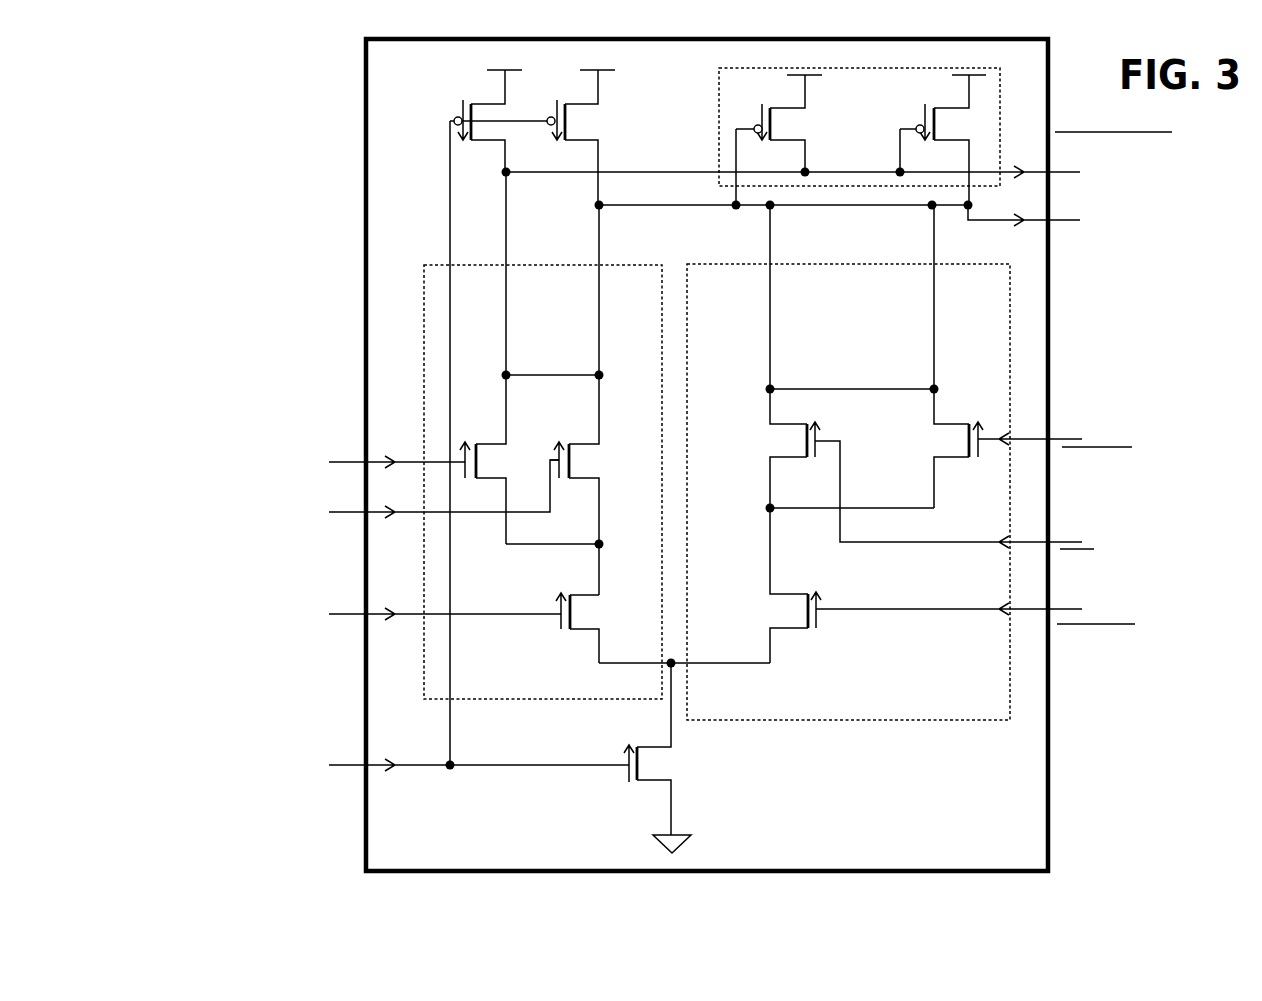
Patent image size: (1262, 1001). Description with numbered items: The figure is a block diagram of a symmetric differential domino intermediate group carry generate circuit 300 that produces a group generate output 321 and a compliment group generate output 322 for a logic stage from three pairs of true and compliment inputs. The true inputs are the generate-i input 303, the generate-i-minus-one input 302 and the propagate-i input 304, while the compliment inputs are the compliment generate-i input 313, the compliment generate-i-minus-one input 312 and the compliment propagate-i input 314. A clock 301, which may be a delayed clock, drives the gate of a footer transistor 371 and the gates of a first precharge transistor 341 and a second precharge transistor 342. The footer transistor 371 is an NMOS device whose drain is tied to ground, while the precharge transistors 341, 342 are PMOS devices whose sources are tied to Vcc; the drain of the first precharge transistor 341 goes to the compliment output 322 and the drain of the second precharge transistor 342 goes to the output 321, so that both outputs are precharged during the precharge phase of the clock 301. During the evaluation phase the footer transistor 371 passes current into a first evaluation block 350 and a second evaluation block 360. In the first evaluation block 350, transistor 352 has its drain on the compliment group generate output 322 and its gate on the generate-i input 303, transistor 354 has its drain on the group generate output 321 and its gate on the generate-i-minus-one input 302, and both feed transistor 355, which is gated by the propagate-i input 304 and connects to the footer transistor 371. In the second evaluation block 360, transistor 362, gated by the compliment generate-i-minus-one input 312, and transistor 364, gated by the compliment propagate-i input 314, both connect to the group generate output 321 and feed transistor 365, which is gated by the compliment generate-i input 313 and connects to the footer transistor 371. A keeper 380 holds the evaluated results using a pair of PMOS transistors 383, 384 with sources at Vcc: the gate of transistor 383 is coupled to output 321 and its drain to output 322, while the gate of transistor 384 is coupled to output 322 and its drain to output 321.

The group carry generate circuit 300 is at (541, 455).
The clock 301 is at (479, 463).
The generate i-1 input 302 is at (416, 512).
The generate i input 303 is at (377, 439).
The propagate i input 304 is at (440, 635).
The compliment generate i-1 input 312 is at (1057, 460).
The compliment generate i input 313 is at (975, 632).
The compliment propagate i input 314 is at (958, 512).
The group generate output 321 is at (888, 235).
The compliment group generate output 322 is at (837, 155).
The first precharge transistor 341 is at (462, 112).
The second precharge transistor 342 is at (613, 137).
The first evaluation block 350 is at (650, 697).
The transistor 352 is at (483, 459).
The transistor 354 is at (591, 485).
The transistor 355 is at (560, 612).
The second evaluation block 360 is at (722, 718).
The transistor 362 is at (939, 448).
The transistor 364 is at (772, 448).
The transistor 365 is at (778, 585).
The footer transistor 371 is at (668, 758).
The keeper 380 is at (859, 122).
The transistor 383 is at (790, 140).
The transistor 384 is at (939, 140).